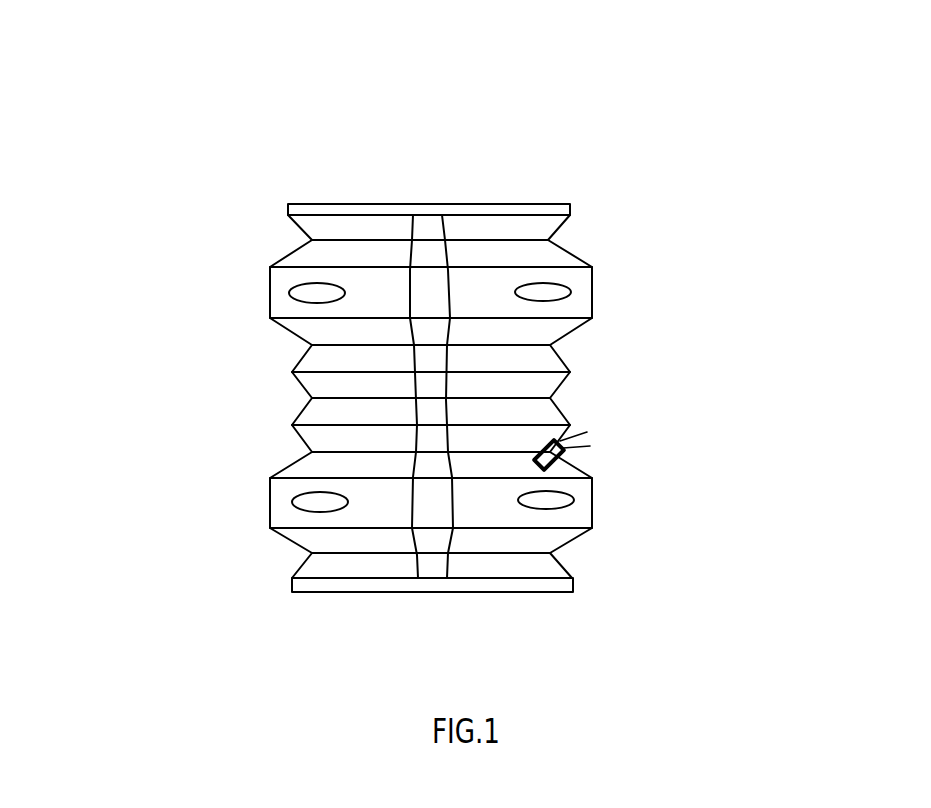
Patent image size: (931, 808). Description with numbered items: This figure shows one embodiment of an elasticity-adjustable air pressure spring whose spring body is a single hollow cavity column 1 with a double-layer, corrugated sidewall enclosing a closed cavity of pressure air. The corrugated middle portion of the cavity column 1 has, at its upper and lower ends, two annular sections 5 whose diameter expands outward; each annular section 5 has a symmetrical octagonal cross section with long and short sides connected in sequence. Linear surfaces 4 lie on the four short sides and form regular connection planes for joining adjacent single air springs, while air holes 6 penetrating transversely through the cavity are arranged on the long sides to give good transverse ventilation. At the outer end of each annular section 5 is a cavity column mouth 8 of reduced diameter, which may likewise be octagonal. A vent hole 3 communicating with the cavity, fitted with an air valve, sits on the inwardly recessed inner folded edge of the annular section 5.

The cavity column mouth 8 is at (435, 296).
The cavity column 1 is at (296, 425).
The linear surface 4 is at (419, 289).
The air hole 6 is at (552, 292).
The annular section 5 is at (578, 512).
The vent hole 3 is at (604, 438).